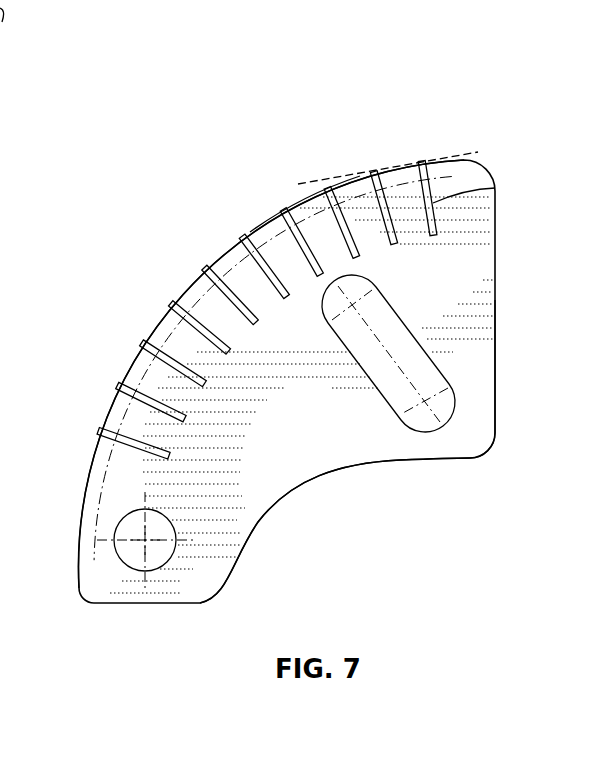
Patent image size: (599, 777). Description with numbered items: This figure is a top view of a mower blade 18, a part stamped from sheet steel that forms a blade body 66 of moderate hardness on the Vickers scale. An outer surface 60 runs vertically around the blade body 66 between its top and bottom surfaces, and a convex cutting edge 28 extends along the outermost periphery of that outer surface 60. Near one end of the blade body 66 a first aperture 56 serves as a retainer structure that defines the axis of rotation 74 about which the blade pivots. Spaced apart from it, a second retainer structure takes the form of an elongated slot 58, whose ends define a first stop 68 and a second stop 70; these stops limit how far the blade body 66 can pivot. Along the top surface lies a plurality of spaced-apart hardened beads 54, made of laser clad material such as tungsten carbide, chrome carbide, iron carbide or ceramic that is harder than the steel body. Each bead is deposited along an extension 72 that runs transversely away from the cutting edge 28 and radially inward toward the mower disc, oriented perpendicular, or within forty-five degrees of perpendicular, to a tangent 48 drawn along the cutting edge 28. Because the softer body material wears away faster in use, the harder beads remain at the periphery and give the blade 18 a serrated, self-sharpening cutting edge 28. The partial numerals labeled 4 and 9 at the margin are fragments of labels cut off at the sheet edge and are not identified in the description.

The blade 18 is at (218, 117).
The cutting edge 28 is at (186, 288).
The tangent 48 is at (333, 178).
The hardened beads 54 is at (280, 333).
The extension 72 is at (484, 186).
The first aperture 56 is at (100, 533).
The elongated slot 58 is at (395, 303).
The blade body 66 is at (340, 453).
The first stop 68 is at (306, 203).
The second stop 70 is at (435, 432).
The axis of rotation 74 is at (145, 540).
The outer surface 60 is at (0, 140).
The component (cut off) 4 is at (6, 225).
The component (cut off) 9 is at (77, 572).